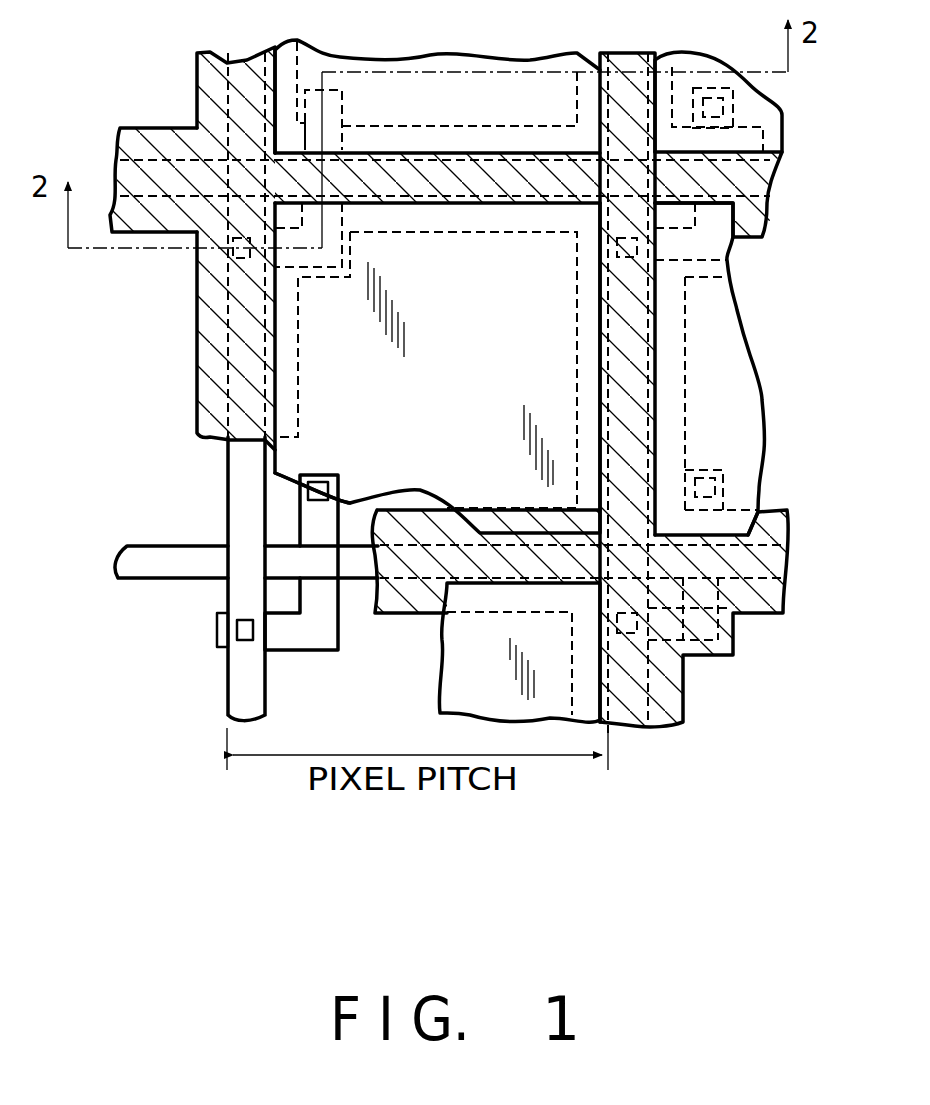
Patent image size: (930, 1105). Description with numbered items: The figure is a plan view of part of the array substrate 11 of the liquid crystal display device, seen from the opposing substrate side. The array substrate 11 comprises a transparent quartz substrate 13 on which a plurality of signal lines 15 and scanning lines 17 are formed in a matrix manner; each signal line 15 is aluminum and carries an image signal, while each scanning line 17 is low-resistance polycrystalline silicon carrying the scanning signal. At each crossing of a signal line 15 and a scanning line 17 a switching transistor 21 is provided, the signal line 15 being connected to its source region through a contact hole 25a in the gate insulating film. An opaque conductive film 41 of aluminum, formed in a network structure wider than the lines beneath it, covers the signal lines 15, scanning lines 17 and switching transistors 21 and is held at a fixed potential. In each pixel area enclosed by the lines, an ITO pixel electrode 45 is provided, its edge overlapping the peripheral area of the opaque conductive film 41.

The array substrate 11 is at (800, 421).
The substrate 13 is at (352, 673).
The signal line 15 is at (235, 593).
The scanning line 17 is at (140, 552).
The switching transistor 21 is at (294, 660).
The contact hole 25a is at (217, 630).
The opaque conductive film 41 is at (208, 352).
The pixel electrode 45 is at (277, 448).